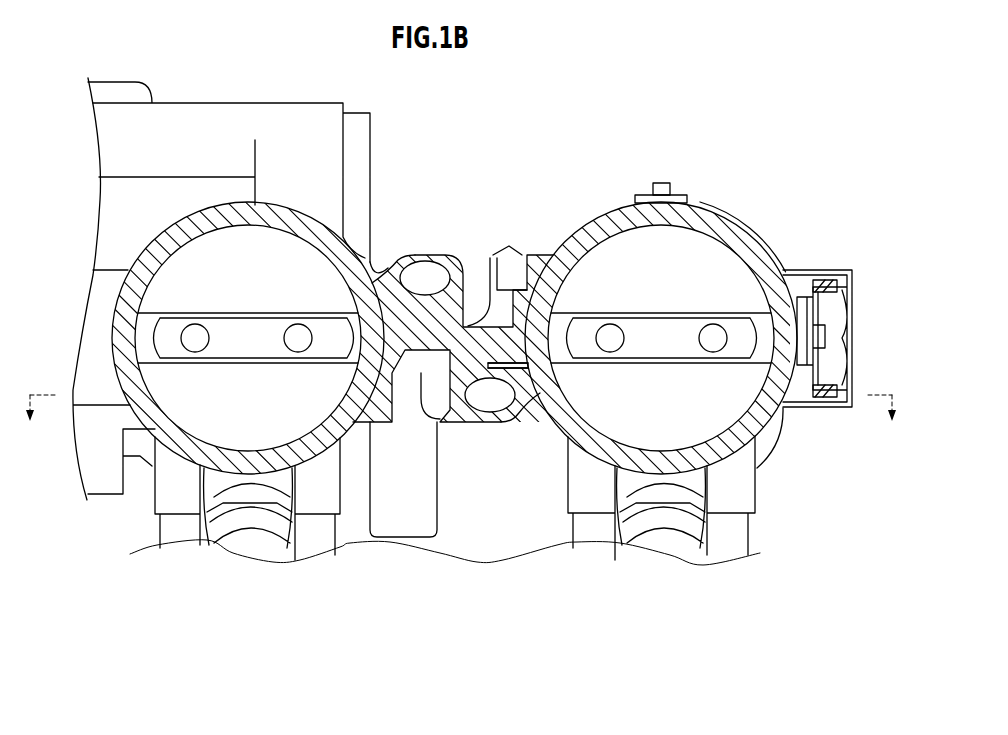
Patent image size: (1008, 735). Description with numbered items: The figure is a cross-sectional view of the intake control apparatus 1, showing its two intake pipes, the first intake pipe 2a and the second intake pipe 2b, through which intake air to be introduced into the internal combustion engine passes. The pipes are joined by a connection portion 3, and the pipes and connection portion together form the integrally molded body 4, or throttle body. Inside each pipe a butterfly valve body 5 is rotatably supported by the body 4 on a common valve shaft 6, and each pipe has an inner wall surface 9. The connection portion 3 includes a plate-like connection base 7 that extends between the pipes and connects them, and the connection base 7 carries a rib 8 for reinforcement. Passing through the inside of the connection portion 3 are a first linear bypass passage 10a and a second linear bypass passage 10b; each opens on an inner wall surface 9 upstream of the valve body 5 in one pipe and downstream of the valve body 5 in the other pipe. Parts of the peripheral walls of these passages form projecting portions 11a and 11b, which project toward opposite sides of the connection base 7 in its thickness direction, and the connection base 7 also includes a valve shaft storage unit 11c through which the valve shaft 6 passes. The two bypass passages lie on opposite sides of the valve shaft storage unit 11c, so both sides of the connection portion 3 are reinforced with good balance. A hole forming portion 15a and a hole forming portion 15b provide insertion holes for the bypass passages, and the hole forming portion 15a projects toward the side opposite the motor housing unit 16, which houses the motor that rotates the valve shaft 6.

The intake control apparatus 1 is at (787, 123).
The first intake pipe 2a is at (765, 420).
The second intake pipe 2b is at (117, 280).
The connection portion 3 is at (463, 244).
The body 4 is at (803, 245).
The valve body 5 is at (205, 242).
The valve shaft 6 is at (728, 308).
The connection base 7 is at (488, 312).
The rib 8 is at (382, 250).
The inner wall surface 9 is at (235, 238).
The first linear bypass passage 10a is at (475, 422).
The second linear bypass passage 10b is at (420, 253).
The projecting portion 11a is at (489, 400).
The projecting portion 11b is at (425, 272).
The valve shaft storage unit 11c is at (493, 253).
The hole forming portion 15a is at (365, 497).
The hole forming portion 15b is at (512, 253).
The motor housing unit 16 is at (268, 103).